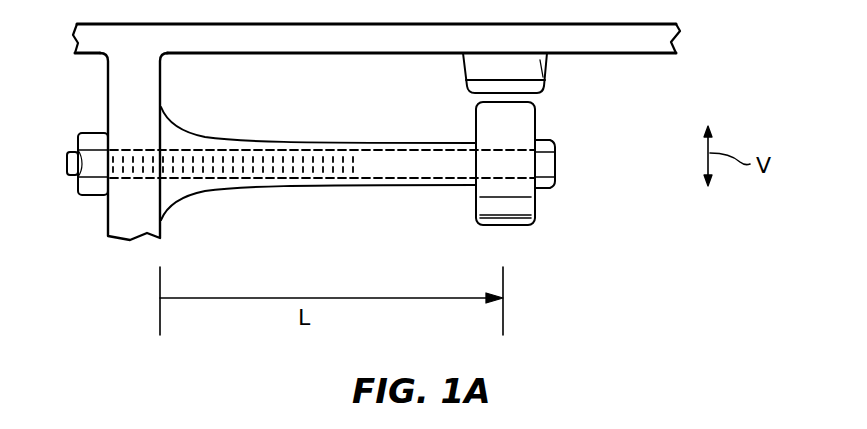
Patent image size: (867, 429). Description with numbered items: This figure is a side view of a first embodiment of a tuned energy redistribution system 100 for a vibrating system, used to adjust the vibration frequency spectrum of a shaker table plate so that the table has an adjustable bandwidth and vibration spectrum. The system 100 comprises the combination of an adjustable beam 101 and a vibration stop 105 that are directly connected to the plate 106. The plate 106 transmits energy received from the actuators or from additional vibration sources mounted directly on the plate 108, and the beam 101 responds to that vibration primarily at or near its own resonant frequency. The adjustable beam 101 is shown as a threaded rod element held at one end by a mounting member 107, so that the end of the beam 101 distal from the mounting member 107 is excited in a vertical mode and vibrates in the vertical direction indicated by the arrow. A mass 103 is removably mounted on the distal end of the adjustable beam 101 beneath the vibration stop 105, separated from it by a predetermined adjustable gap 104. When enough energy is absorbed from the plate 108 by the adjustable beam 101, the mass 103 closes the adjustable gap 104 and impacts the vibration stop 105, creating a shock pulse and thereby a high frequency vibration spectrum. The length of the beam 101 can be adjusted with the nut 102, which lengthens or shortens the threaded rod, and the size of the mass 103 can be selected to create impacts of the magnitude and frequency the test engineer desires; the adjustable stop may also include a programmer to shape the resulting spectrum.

The tuned energy redistribution system 100 is at (660, 241).
The adjustable beam 101 is at (408, 143).
The nut 102 is at (88, 133).
The mass 103 is at (536, 205).
The adjustable gap 104 is at (546, 101).
The vibration stop 105 is at (548, 64).
The plate 106 is at (661, 53).
The mounting member 107 is at (161, 77).
The plate 108 is at (548, 86).